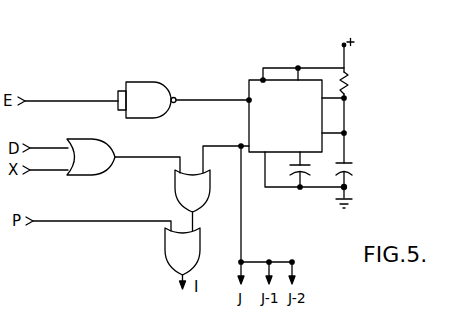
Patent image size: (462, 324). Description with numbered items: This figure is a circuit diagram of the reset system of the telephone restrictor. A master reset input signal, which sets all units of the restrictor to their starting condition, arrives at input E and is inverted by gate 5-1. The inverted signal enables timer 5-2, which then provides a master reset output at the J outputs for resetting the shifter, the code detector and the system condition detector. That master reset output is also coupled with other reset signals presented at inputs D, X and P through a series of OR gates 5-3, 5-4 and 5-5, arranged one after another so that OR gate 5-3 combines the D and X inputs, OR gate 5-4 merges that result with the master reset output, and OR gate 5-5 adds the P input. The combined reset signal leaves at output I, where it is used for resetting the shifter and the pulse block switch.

The gate 5-1 is at (152, 90).
The timer 5-2 is at (248, 83).
The OR gate 5-3 is at (88, 148).
The OR gate 5-4 is at (178, 177).
The OR gate 5-5 is at (171, 238).